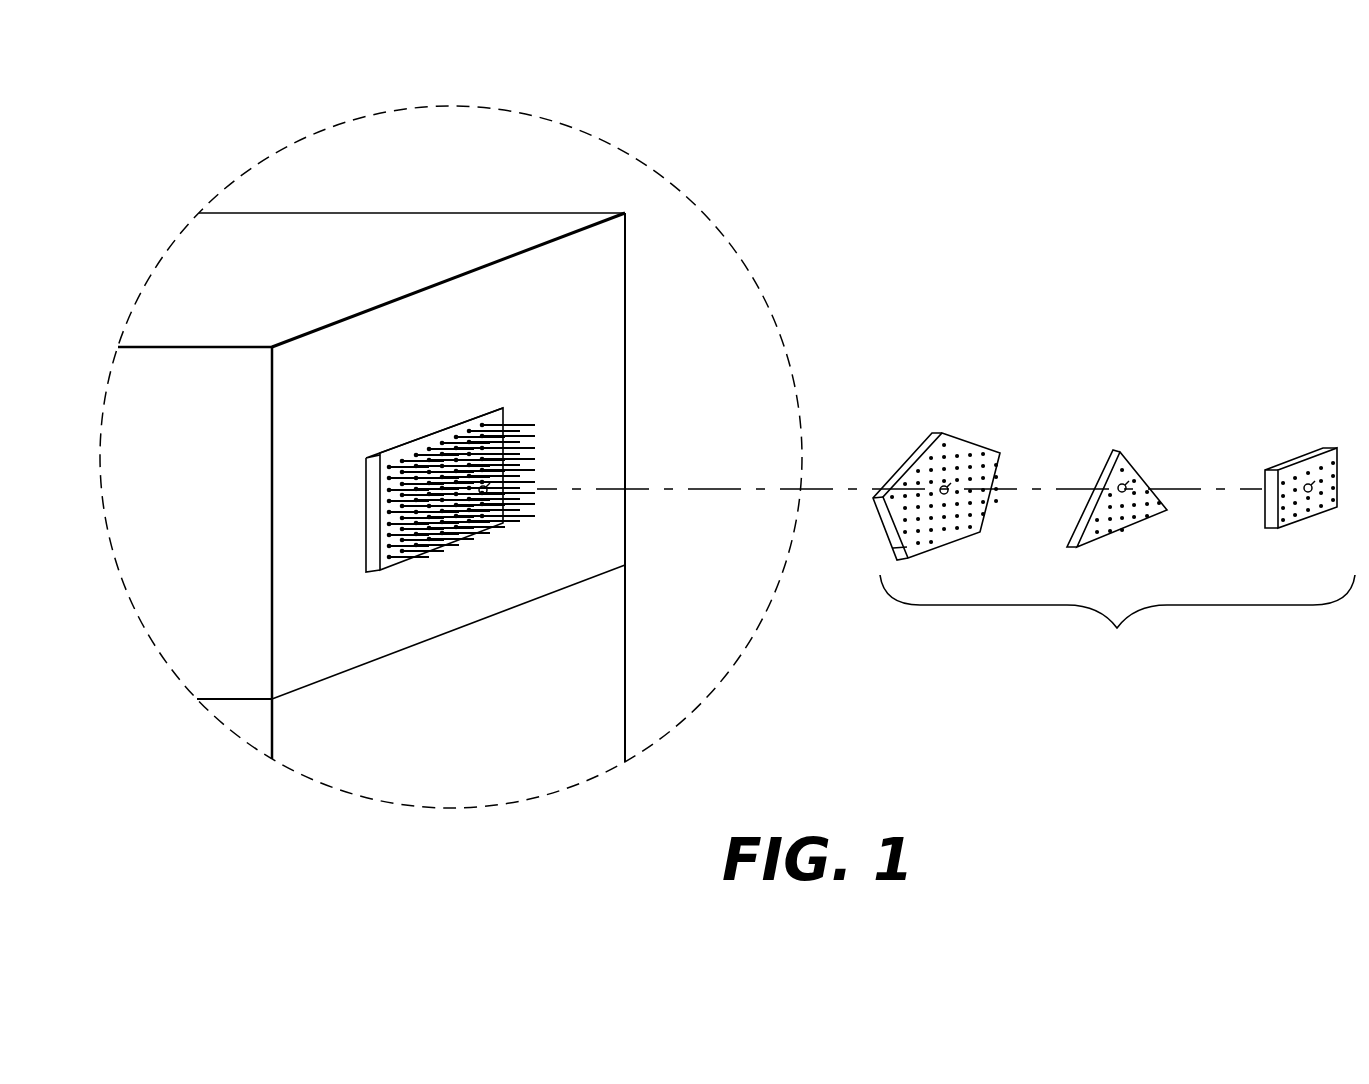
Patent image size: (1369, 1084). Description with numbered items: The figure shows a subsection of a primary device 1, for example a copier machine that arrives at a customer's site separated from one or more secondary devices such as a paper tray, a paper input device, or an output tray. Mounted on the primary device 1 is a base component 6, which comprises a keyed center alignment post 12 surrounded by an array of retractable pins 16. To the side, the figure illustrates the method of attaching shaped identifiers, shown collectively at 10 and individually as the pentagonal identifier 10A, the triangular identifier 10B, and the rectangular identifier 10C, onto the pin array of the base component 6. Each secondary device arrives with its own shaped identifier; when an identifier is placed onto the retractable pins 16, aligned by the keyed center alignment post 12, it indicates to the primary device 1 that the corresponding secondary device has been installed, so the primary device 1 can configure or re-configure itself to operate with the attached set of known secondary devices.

The primary device 1 is at (613, 311).
The base component 6 is at (368, 487).
The retractable pins 16 is at (532, 437).
The keyed center alignment post 12 is at (481, 497).
The shaped identifiers 10 is at (1139, 665).
The shaped identifier 10A is at (918, 451).
The shaped identifier 10B is at (1105, 470).
The shaped identifier 10C is at (1290, 463).